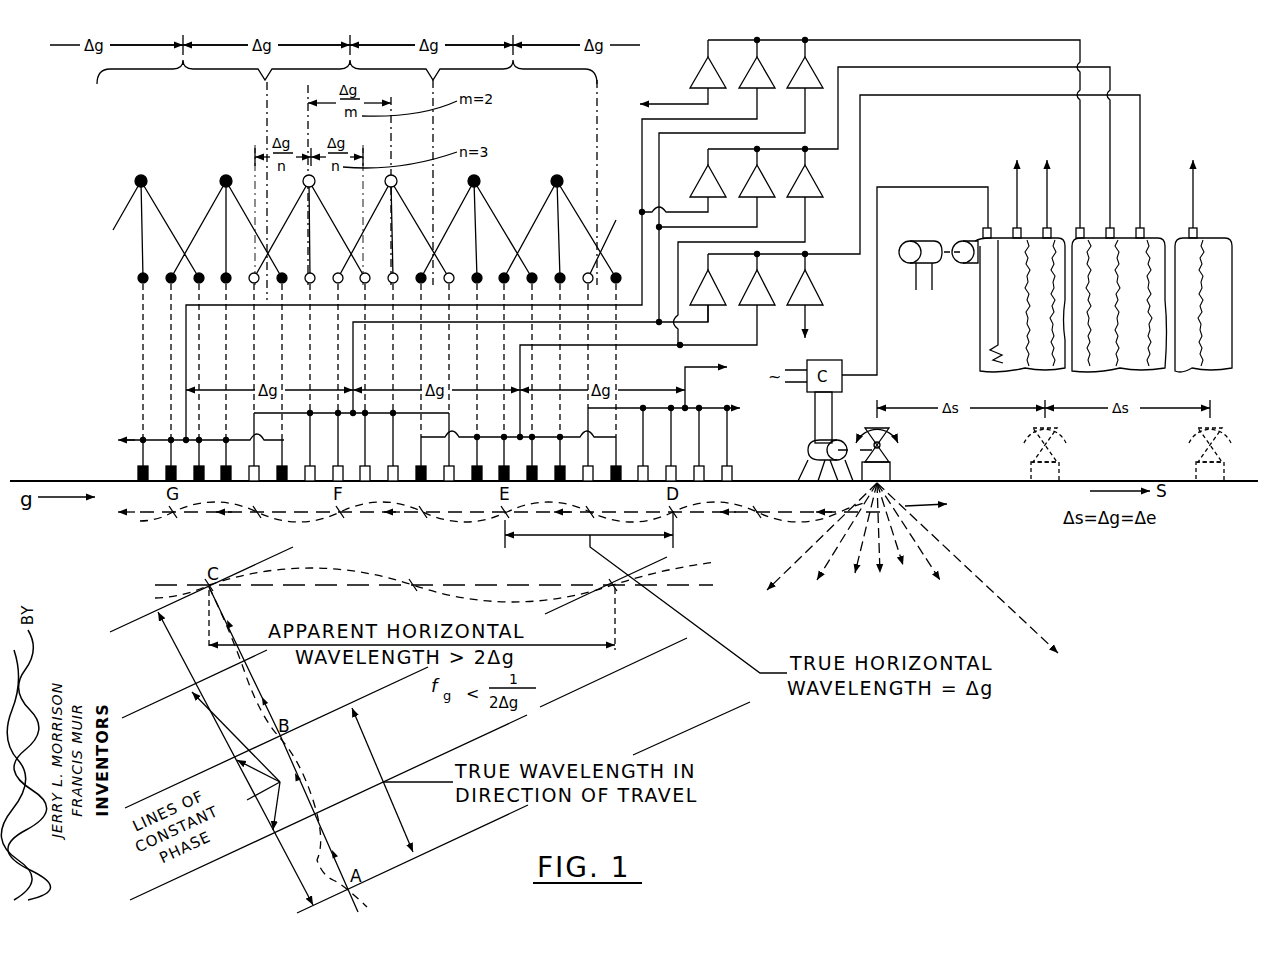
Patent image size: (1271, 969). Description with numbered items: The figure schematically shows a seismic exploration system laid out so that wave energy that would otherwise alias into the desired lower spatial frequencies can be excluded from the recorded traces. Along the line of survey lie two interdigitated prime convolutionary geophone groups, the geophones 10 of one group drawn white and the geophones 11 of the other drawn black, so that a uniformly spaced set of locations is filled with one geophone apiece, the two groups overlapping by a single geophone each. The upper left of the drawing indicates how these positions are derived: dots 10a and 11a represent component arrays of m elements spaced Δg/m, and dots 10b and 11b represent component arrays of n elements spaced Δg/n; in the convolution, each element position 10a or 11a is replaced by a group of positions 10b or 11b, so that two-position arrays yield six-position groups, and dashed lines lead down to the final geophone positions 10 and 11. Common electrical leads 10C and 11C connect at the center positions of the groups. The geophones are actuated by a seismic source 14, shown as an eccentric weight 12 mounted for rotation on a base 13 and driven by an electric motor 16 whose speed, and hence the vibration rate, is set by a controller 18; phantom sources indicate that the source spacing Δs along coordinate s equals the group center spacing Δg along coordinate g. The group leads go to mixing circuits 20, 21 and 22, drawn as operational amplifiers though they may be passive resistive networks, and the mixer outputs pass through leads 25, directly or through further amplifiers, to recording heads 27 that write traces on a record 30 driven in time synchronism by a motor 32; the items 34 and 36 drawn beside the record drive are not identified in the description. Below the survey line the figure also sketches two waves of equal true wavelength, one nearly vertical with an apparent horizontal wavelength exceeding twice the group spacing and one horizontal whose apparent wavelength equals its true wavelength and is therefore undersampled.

The geophones 10 is at (480, 444).
The geophones 11 is at (364, 459).
The component array dots 10a is at (388, 185).
The component array dots 11a is at (357, 201).
The component array dots 10b is at (363, 276).
The component array dots 11b is at (379, 341).
The common electrical lead 10C is at (353, 352).
The common electrical lead 11C is at (412, 265).
The eccentric weight 12 is at (868, 434).
The base 13 is at (891, 471).
The seismic source 14 is at (1060, 454).
The electric motor 16 is at (806, 450).
The controller 18 is at (806, 395).
The mixing circuit 20 is at (724, 172).
The mixing circuit 21 is at (692, 181).
The mixing circuit 22 is at (753, 192).
The leads 25 is at (975, 94).
The recording heads 27 is at (1142, 226).
The record 30 is at (978, 337).
The motor 32 is at (923, 240).
The timing marker 34 is at (983, 227).
The control line 36 is at (972, 186).